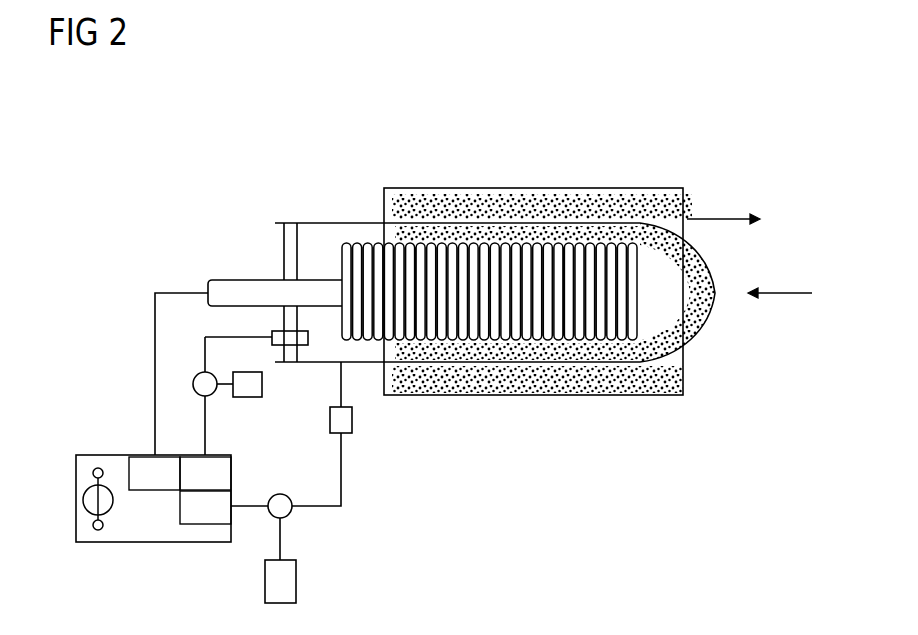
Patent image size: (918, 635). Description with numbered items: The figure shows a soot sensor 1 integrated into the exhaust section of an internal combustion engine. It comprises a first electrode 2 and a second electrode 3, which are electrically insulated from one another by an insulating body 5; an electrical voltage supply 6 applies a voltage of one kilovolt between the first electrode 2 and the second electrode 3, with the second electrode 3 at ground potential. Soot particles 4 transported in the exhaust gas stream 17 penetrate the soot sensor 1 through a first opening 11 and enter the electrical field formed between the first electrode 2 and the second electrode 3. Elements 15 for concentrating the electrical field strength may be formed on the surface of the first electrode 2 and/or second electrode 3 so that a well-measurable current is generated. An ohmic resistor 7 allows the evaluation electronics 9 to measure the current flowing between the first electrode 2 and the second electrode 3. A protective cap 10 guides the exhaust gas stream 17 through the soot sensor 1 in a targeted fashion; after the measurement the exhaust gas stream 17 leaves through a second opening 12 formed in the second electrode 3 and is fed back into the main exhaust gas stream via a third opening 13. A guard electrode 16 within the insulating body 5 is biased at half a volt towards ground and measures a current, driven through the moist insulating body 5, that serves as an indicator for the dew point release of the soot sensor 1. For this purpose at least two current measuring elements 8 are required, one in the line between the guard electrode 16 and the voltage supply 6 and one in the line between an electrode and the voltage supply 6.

The soot sensor 1 is at (655, 159).
The first electrode 2 is at (530, 268).
The second electrode 3 is at (625, 364).
The soot particles 4 is at (703, 258).
The insulating body 5 is at (283, 243).
The electrical voltage supply 6 is at (76, 497).
The ohmic resistor 7 is at (330, 420).
The current measuring element 8 is at (213, 393).
The evaluation electronics 9 is at (262, 384).
The protective cap 10 is at (672, 397).
The first opening 11 is at (715, 295).
The second opening 12 is at (683, 369).
The third opening 13 is at (428, 366).
The elements for concentrating the electrical field strength 15 is at (468, 242).
The guard electrode 16 is at (272, 333).
The exhaust gas stream 17 is at (728, 217).